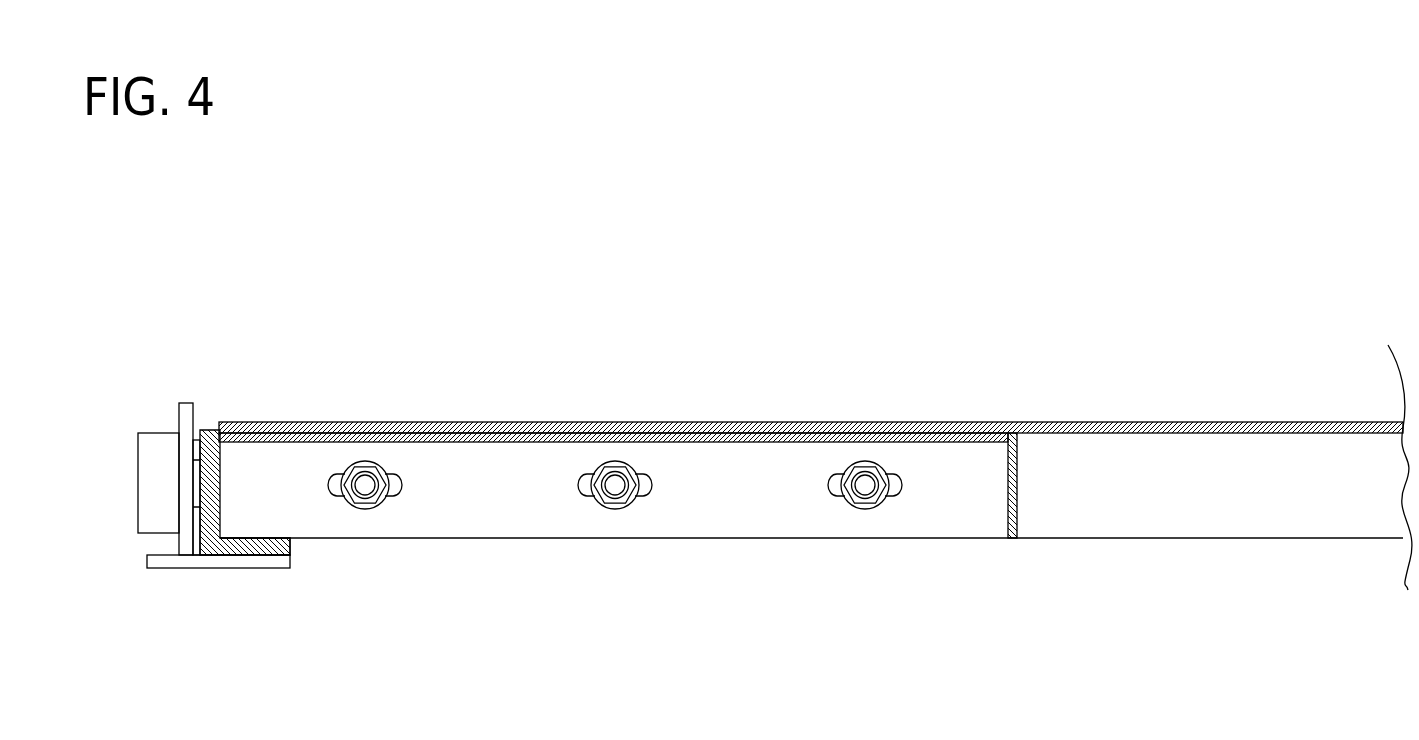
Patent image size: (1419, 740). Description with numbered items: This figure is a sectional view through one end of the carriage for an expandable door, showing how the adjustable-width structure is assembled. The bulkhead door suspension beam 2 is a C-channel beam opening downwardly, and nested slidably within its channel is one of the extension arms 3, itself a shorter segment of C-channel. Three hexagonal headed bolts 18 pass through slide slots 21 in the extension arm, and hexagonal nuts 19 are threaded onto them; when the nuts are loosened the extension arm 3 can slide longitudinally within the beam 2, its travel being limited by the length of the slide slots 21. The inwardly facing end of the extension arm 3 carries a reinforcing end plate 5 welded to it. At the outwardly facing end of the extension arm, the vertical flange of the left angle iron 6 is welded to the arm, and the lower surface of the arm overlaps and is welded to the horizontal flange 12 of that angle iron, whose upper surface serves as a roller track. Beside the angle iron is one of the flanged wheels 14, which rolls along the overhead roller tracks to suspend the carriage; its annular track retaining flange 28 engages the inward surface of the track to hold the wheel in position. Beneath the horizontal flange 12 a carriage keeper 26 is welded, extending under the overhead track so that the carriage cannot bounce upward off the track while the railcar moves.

The bulkhead door suspension beam 2 is at (1198, 430).
The extension arms 3 is at (485, 510).
The reinforcing end plates 5 is at (1015, 498).
The left angle iron 6 is at (205, 433).
The horizontal flanges 12 is at (287, 543).
The flanged wheels 14 is at (152, 450).
The hexagonal headed bolts 18 is at (612, 483).
The hexagonal nuts 19 is at (635, 493).
The slide slots 21 is at (833, 487).
The carriage keepers 26 is at (177, 563).
The annular track retaining flange 28 is at (183, 413).